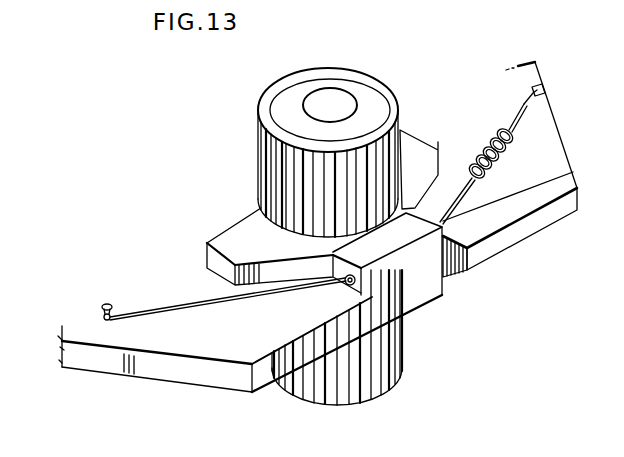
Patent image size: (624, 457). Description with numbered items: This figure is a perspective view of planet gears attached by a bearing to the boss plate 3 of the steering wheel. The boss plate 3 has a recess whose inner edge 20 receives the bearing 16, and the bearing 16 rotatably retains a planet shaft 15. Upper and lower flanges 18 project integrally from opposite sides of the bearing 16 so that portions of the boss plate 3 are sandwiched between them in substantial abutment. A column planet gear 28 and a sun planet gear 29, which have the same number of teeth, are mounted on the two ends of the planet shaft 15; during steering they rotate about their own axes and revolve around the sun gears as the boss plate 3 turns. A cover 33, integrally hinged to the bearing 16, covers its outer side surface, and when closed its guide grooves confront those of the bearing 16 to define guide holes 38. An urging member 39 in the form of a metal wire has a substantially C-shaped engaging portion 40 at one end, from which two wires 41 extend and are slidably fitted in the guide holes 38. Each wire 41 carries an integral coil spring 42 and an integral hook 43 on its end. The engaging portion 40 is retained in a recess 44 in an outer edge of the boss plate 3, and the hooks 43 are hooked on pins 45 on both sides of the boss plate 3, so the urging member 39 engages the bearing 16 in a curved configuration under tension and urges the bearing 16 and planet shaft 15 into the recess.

The boss plate 3 is at (488, 226).
The planet shaft 15 is at (325, 93).
The bearing 16 is at (247, 216).
The flange 18 is at (219, 240).
The inner edge 20 is at (451, 272).
The column planet gear 28 is at (377, 398).
The sun planet gear 29 is at (379, 88).
The cover 33 is at (413, 302).
The guide hole 38 is at (356, 281).
The urging member 39 is at (530, 112).
The engaging portion 40 is at (532, 88).
The wire 41 is at (223, 305).
The coil spring 42 is at (497, 160).
The hook 43 is at (106, 322).
The recess 44 is at (546, 89).
The pin 45 is at (112, 307).